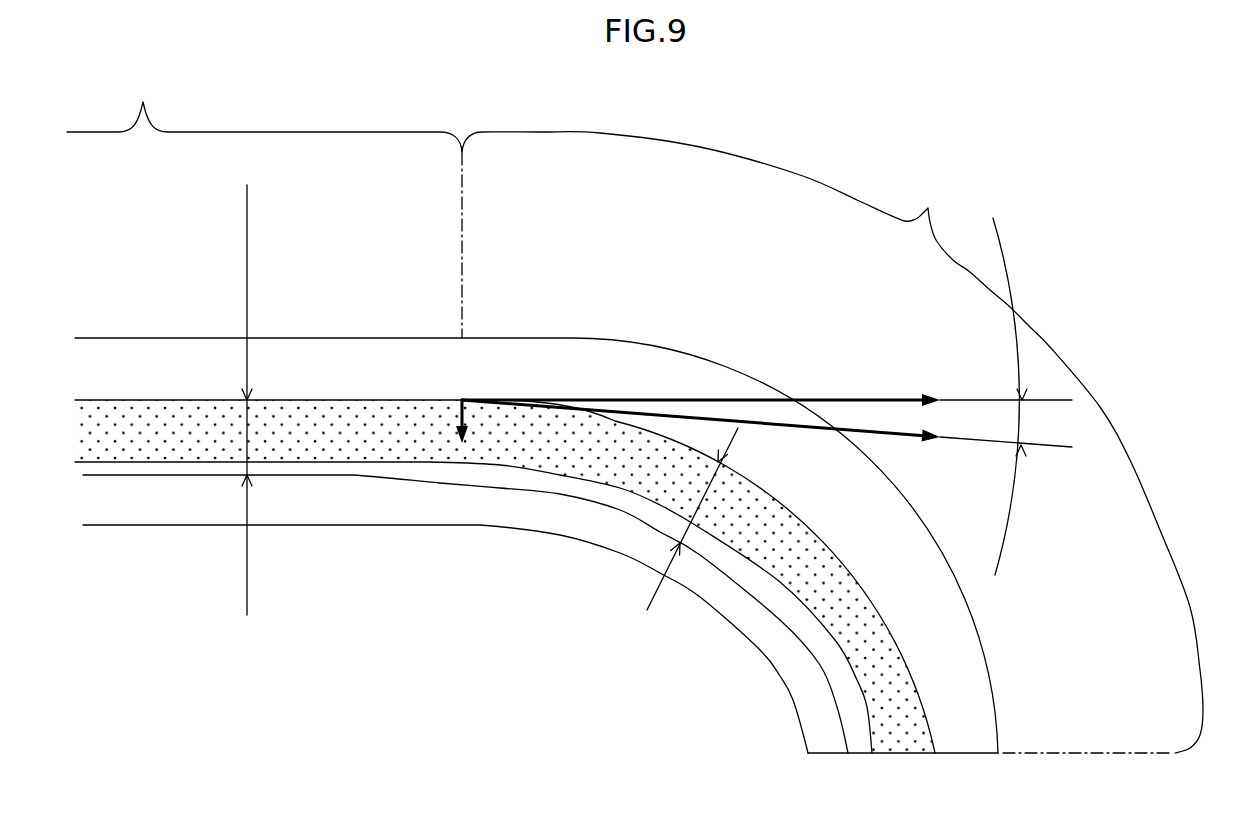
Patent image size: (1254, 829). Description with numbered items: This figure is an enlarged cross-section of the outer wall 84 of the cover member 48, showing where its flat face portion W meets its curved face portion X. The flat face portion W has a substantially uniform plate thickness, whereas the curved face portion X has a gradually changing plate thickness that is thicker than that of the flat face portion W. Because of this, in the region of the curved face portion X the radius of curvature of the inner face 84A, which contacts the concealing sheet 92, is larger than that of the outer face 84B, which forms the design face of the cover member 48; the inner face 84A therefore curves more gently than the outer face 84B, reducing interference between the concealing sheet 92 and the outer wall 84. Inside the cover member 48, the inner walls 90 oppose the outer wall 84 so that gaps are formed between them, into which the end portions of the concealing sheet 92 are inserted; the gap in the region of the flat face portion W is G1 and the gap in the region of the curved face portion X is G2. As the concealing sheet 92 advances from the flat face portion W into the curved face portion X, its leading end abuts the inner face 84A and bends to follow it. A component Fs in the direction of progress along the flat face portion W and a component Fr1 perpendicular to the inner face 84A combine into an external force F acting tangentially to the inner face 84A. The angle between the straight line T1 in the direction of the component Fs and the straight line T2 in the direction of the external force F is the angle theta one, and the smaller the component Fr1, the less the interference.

The outer wall 84 is at (536, 498).
The cover member 48 is at (117, 338).
The inner face 84A is at (781, 504).
The outer face 84B is at (722, 365).
The concealing sheet 92 is at (355, 432).
The inner walls 90 is at (138, 528).
The flat face portion W is at (264, 204).
The curved face portion X is at (832, 442).
The component Fs is at (873, 398).
The external force F is at (883, 437).
The component Fr1 is at (458, 420).
The straight line T1 is at (1048, 398).
The straight line T2 is at (1047, 452).
The gap G1 is at (250, 435).
The gap G2 is at (705, 502).